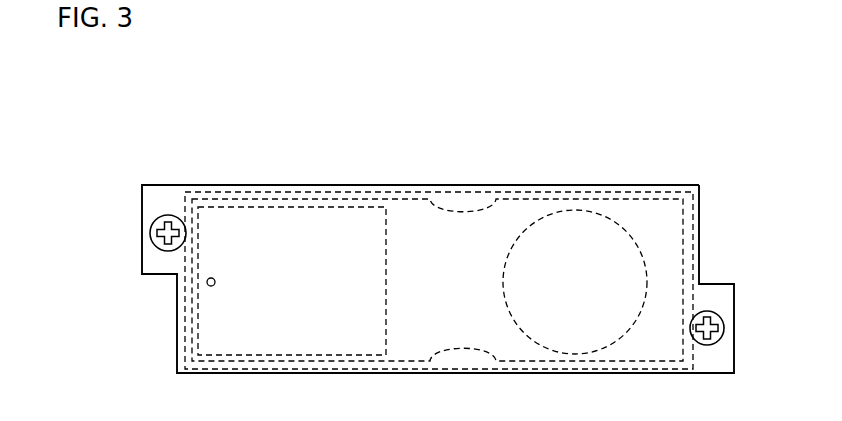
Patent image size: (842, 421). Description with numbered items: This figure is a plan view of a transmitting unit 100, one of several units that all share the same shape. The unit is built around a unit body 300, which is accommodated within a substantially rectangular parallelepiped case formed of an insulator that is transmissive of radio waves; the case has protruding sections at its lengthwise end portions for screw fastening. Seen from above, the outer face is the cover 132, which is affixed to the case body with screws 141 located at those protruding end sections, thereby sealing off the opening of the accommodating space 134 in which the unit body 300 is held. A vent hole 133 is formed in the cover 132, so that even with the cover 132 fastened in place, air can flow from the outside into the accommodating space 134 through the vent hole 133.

The transmitting unit 100 is at (284, 163).
The cover 132 is at (708, 297).
The vent hole 133 is at (207, 283).
The accommodating space 134 is at (218, 192).
The screws 141 is at (151, 226).
The unit body 300 is at (525, 190).